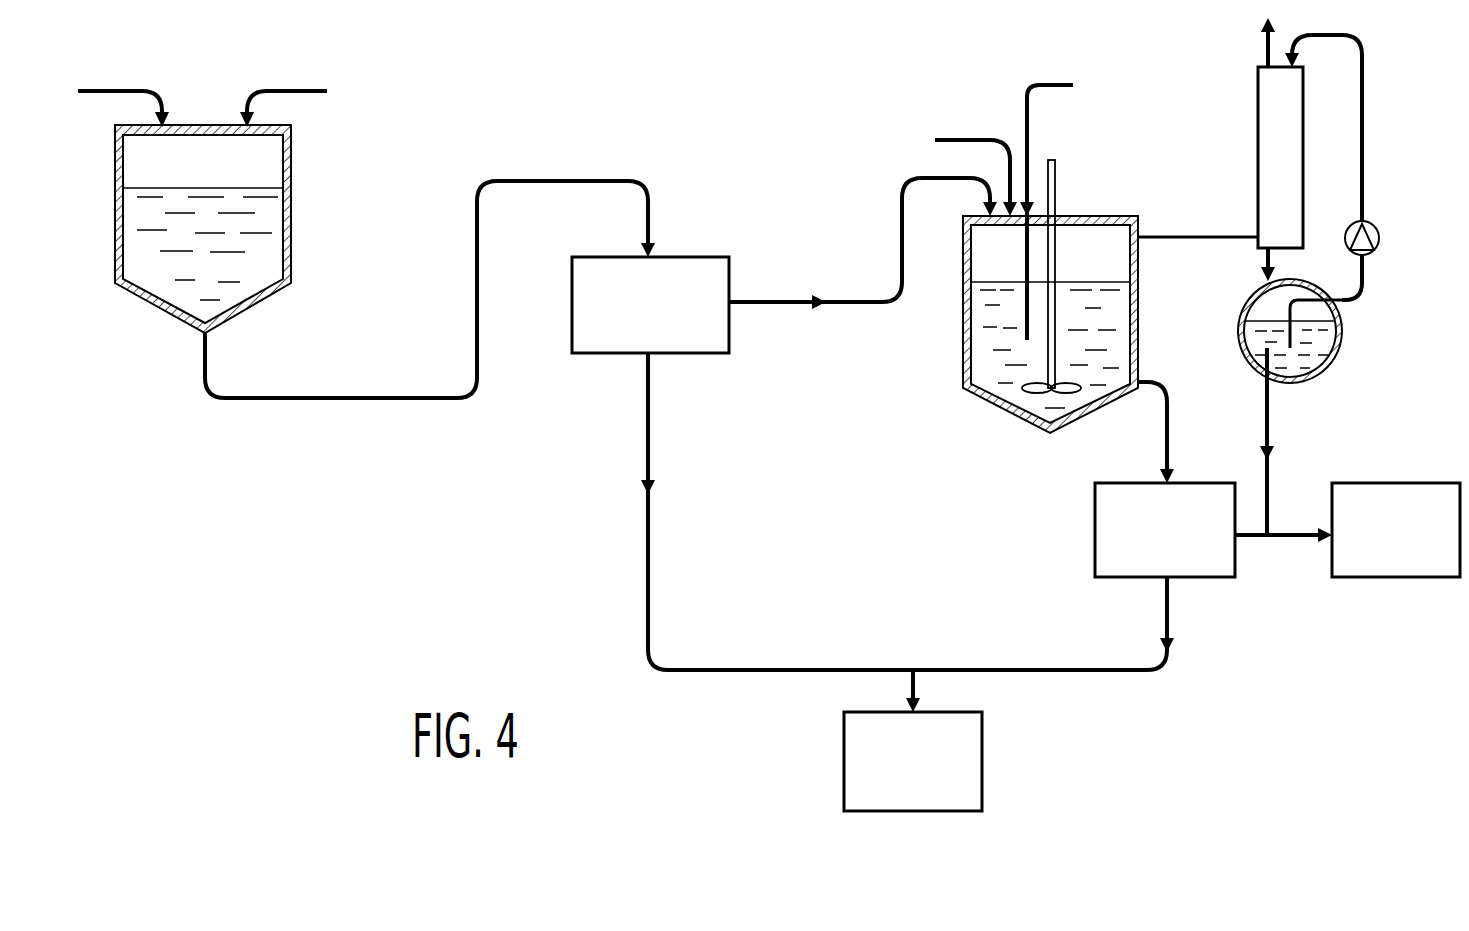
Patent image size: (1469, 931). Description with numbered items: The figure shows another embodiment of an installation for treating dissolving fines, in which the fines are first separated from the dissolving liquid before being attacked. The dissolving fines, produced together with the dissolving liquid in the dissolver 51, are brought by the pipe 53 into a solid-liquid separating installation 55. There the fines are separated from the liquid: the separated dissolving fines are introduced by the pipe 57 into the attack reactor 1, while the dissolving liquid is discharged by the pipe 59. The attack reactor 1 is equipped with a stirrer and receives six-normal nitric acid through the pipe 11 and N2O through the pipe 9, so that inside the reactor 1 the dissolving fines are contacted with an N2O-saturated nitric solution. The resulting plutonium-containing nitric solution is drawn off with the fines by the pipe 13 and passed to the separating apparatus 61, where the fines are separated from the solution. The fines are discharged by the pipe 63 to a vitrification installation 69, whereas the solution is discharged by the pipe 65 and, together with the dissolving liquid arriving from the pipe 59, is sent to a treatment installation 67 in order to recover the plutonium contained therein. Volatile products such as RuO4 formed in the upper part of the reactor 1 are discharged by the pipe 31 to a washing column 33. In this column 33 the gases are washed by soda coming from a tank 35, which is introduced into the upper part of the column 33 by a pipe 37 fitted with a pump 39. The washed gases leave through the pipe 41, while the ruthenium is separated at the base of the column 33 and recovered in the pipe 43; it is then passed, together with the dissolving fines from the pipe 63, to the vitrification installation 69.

The attack reactor 1 is at (1140, 305).
The pipe 9 is at (1031, 125).
The pipe 11 is at (970, 140).
The pipe 13 is at (1168, 432).
The pipe 31 is at (1184, 237).
The washing column 33 is at (1258, 148).
The tank 35 is at (1330, 342).
The pipe 37 is at (1365, 135).
The pump 39 is at (1380, 233).
The pipe 41 is at (1262, 52).
The pipe 43 is at (1268, 430).
The dissolver 51 is at (293, 205).
The pipe 53 is at (352, 397).
The solid-liquid separating installation 55 is at (700, 257).
The pipe 57 is at (862, 304).
The pipe 59 is at (650, 524).
The separating apparatus 61 is at (1095, 533).
The pipe 63 is at (1292, 539).
The pipe 65 is at (1168, 605).
The treatment installation 67 is at (984, 752).
The vitrification installation 69 is at (1395, 578).